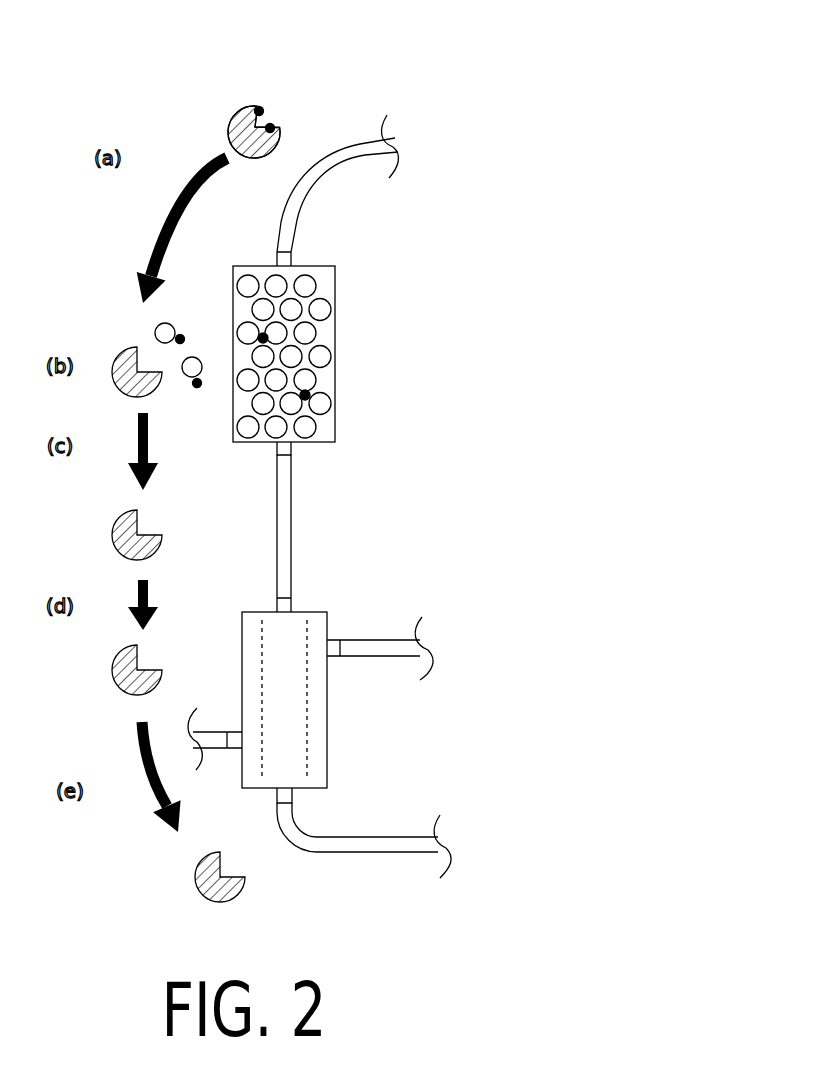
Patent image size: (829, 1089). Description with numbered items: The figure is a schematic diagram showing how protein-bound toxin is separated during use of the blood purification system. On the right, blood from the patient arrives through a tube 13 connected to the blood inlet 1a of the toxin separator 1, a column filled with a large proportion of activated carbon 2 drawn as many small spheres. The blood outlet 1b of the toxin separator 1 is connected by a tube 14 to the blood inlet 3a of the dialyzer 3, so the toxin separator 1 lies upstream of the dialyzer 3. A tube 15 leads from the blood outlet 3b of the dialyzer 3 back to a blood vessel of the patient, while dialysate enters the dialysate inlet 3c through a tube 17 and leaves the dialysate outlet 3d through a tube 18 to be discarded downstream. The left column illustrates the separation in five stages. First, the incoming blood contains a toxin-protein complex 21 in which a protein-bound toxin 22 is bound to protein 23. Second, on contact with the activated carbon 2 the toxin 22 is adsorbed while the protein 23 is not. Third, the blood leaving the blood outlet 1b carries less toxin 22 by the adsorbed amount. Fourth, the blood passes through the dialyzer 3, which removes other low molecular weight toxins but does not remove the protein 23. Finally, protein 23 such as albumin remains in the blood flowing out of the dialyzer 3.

The toxin separator 1 is at (337, 357).
The blood inlet 1a is at (293, 259).
The blood outlet 1b is at (293, 452).
The activated carbon 2 is at (167, 323).
The dialyzer 3 is at (242, 640).
The blood inlet 3a is at (292, 603).
The blood outlet 3b is at (293, 793).
The dialysate inlet 3c is at (233, 733).
The dialysate outlet 3d is at (331, 658).
The tube 13 is at (333, 174).
The tube 14 is at (292, 511).
The tube 15 is at (407, 854).
The tube 17 is at (205, 749).
The tube 18 is at (400, 658).
The toxin-protein complex 21 is at (282, 82).
The protein-bound toxin 22 is at (262, 115).
The protein 23 is at (232, 118).